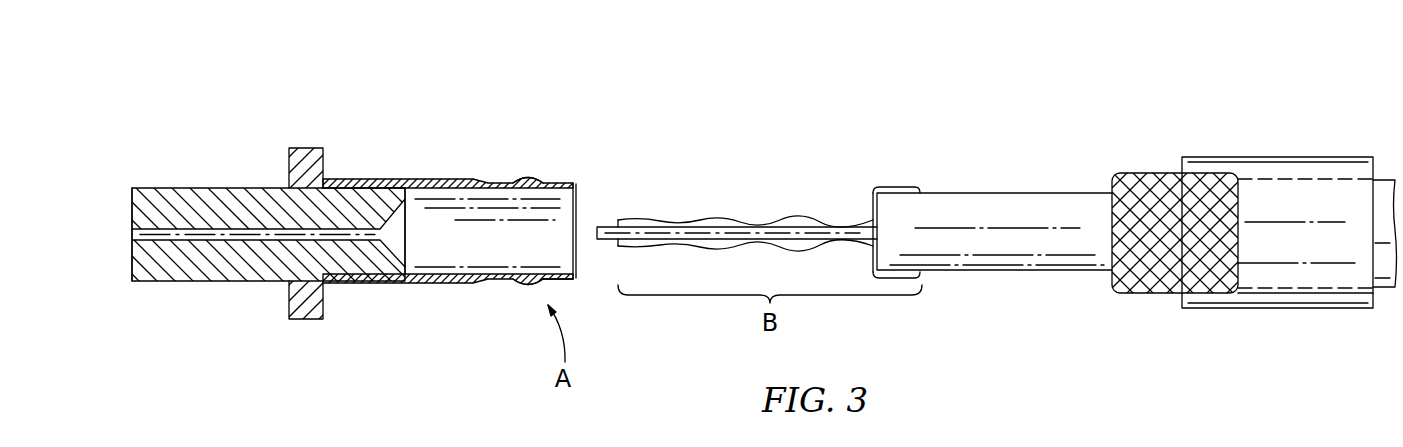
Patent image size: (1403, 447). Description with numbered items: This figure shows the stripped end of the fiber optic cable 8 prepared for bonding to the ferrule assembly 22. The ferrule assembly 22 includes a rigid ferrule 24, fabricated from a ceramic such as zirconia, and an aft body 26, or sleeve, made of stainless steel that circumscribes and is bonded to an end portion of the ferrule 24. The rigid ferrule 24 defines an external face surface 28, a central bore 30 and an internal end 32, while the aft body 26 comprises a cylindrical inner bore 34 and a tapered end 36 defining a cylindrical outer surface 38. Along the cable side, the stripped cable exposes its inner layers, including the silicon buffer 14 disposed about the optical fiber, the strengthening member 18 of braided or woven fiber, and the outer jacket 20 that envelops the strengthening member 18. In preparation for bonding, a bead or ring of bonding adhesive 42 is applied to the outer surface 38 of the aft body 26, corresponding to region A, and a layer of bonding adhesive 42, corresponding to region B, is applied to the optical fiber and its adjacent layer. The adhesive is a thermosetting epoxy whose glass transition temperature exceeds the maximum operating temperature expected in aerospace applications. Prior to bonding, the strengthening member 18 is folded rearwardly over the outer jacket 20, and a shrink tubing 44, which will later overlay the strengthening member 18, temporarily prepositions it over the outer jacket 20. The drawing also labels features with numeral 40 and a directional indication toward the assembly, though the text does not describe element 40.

The fiber optic cable 8 is at (1172, 97).
The silicon buffer 14 is at (1002, 268).
The strengthening member 18 is at (1143, 180).
The outer jacket 20 is at (1265, 280).
The ferrule assembly 22 is at (363, 82).
The rigid ferrule 24 is at (212, 188).
The aft body 26 is at (418, 185).
The external face surface 28 is at (132, 275).
The central bore 30 is at (137, 234).
The internal end 32 is at (360, 268).
The cylindrical inner bore 34 is at (420, 272).
The tapered end 36 is at (573, 282).
The cylindrical outer surface 38 is at (570, 182).
The retention bumps 40 is at (528, 177).
The bonding adhesive 42 is at (873, 195).
The shrink tubing 44 is at (1255, 167).